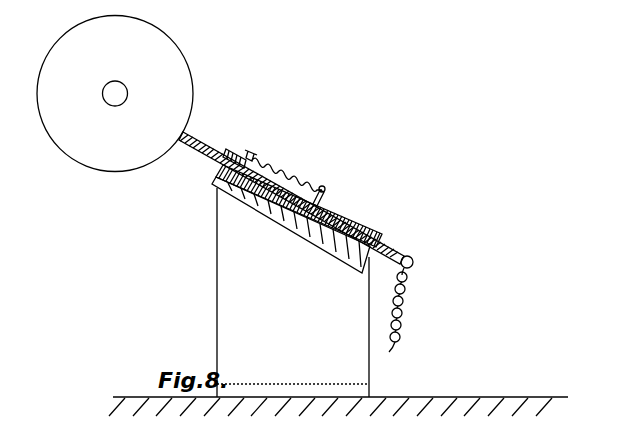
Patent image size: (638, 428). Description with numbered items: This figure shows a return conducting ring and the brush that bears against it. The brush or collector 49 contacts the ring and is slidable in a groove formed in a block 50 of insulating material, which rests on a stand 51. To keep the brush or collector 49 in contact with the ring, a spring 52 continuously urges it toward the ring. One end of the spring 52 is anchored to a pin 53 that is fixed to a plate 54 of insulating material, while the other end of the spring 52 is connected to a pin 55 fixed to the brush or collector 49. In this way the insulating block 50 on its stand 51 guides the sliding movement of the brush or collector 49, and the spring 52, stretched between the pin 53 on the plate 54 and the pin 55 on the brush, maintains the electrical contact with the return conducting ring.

The brush or collector 49 is at (212, 125).
The block 50 is at (222, 168).
The stand 51 is at (293, 292).
The spring 52 is at (273, 166).
The pin 53 is at (252, 151).
The plate 54 is at (238, 151).
The pin 55 is at (326, 191).